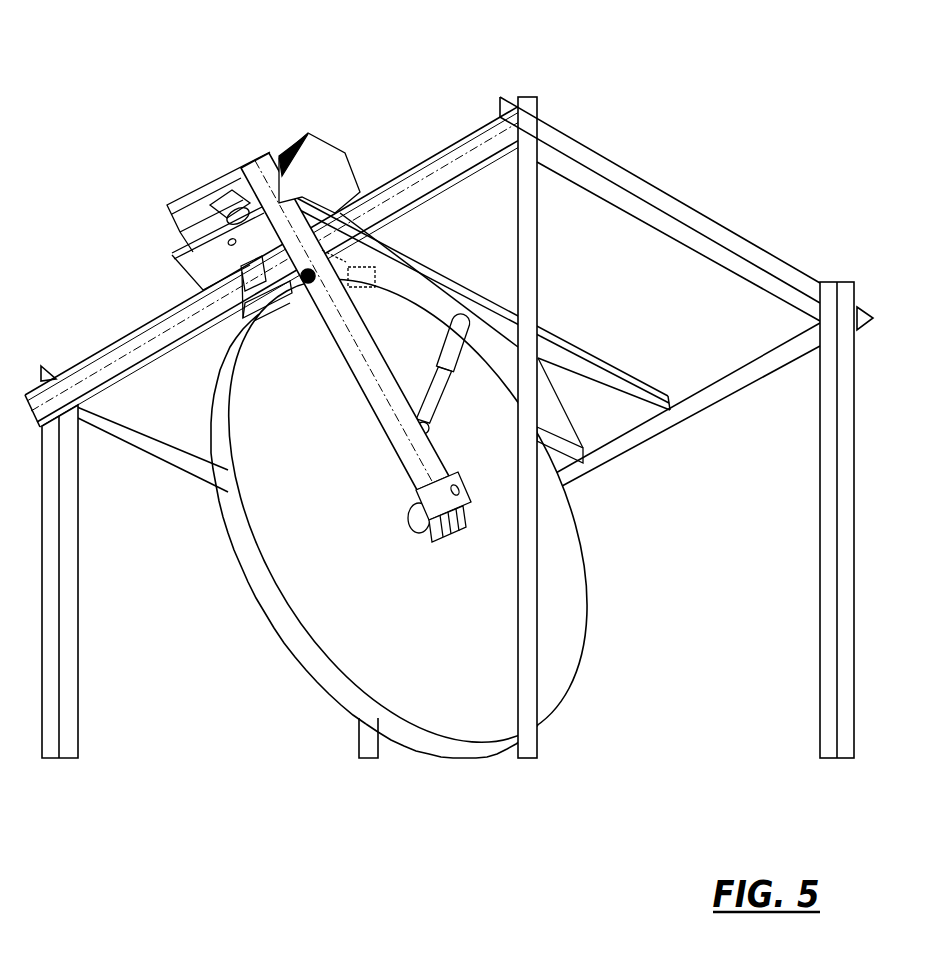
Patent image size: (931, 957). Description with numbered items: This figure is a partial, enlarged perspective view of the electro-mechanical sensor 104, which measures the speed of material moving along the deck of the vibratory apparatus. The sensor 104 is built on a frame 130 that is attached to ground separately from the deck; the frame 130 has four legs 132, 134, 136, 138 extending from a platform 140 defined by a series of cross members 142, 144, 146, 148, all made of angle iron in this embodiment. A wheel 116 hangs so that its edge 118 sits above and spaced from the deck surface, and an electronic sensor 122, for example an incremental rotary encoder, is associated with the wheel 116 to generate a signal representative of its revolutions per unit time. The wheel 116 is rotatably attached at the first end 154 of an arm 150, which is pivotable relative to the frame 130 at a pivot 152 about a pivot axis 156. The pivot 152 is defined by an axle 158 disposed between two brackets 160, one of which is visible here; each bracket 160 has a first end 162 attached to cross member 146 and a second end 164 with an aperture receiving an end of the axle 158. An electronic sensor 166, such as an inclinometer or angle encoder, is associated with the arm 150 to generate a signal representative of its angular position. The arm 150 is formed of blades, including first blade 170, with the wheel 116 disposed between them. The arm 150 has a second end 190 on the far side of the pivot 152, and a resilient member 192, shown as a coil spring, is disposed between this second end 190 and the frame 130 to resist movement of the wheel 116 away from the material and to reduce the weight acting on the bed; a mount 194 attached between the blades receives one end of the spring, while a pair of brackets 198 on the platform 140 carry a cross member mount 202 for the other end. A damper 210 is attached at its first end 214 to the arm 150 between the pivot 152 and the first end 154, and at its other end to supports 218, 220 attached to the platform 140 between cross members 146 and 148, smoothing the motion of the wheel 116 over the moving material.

The electro-mechanical sensor 104 is at (449, 438).
The wheel 116 is at (411, 528).
The edge 118 is at (430, 745).
The electronic sensor 122 is at (433, 497).
The frame 130 is at (448, 540).
The leg 132 is at (540, 755).
The leg 134 is at (818, 678).
The leg 136 is at (78, 690).
The leg 138 is at (362, 745).
The platform 140 is at (686, 427).
The cross member 142 is at (693, 237).
The cross member 144 is at (137, 437).
The cross member 146 is at (427, 193).
The cross member 148 is at (670, 417).
The arm 150 is at (196, 227).
The pivot 152 is at (182, 294).
The first end 154 is at (356, 367).
The pivot axis 156 is at (481, 255).
The axle 158 is at (280, 305).
The bracket 160 is at (247, 284).
The first end 162 is at (245, 276).
The second end 164 is at (280, 344).
The electronic sensor 166 is at (363, 225).
The first blade 170 is at (377, 422).
The second end 190 is at (248, 160).
The resilient member 192 is at (163, 166).
The mount 194 is at (187, 238).
The bracket 198 is at (313, 149).
The cross member mount 202 is at (283, 158).
The damper 210 is at (460, 388).
The first end 214 is at (424, 434).
The support 218 is at (612, 370).
The support 220 is at (570, 466).